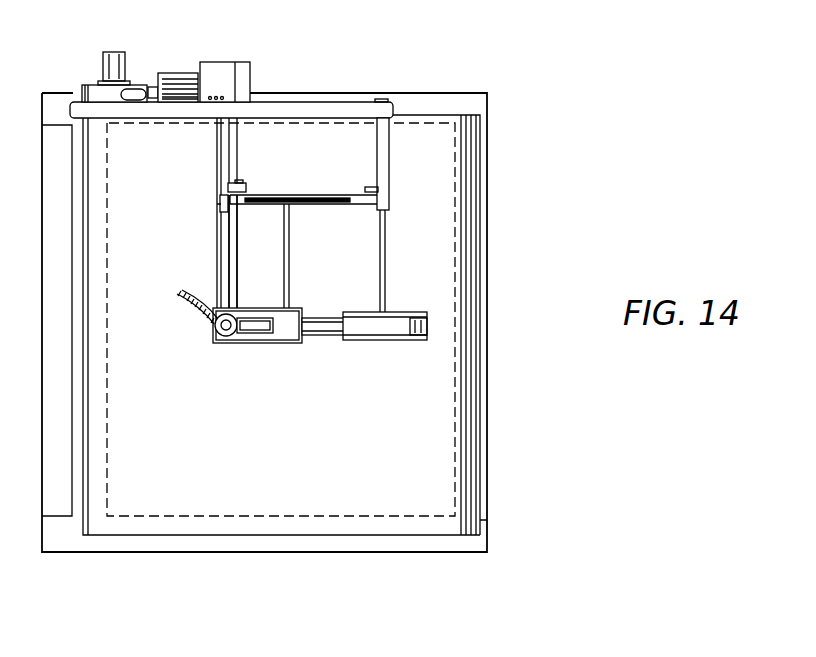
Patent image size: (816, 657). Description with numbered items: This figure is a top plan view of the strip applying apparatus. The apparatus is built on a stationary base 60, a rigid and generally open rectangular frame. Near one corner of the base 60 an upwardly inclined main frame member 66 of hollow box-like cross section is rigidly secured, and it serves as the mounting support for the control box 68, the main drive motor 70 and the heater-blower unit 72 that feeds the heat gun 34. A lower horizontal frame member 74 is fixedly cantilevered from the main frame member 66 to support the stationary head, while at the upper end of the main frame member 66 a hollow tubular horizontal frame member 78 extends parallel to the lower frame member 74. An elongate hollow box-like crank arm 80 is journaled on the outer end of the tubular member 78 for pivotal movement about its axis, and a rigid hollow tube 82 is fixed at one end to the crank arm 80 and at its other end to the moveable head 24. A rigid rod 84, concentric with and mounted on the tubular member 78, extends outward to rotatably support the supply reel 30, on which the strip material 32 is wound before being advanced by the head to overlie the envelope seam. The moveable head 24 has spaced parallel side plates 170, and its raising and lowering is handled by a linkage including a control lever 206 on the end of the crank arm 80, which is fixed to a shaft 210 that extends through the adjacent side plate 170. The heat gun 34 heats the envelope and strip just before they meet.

The stationary base 60 is at (260, 540).
The main frame member 66 is at (290, 108).
The control box 68 is at (222, 67).
The main drive motor 70 is at (190, 70).
The heater-blower unit 72 is at (92, 80).
The lower horizontal frame member 74 is at (217, 166).
The hollow tubular horizontal frame member 78 is at (390, 165).
The crank arm 80 is at (323, 210).
The rigid hollow tube 82 is at (238, 283).
The rigid rod 84 is at (387, 272).
The side plates 170 is at (290, 310).
The control lever 206 is at (238, 183).
The shaft 210 is at (227, 242).
The moveable head 24 is at (300, 340).
The supply reel 30 is at (382, 340).
The strip material 32 is at (323, 332).
The heat gun 34 is at (262, 333).